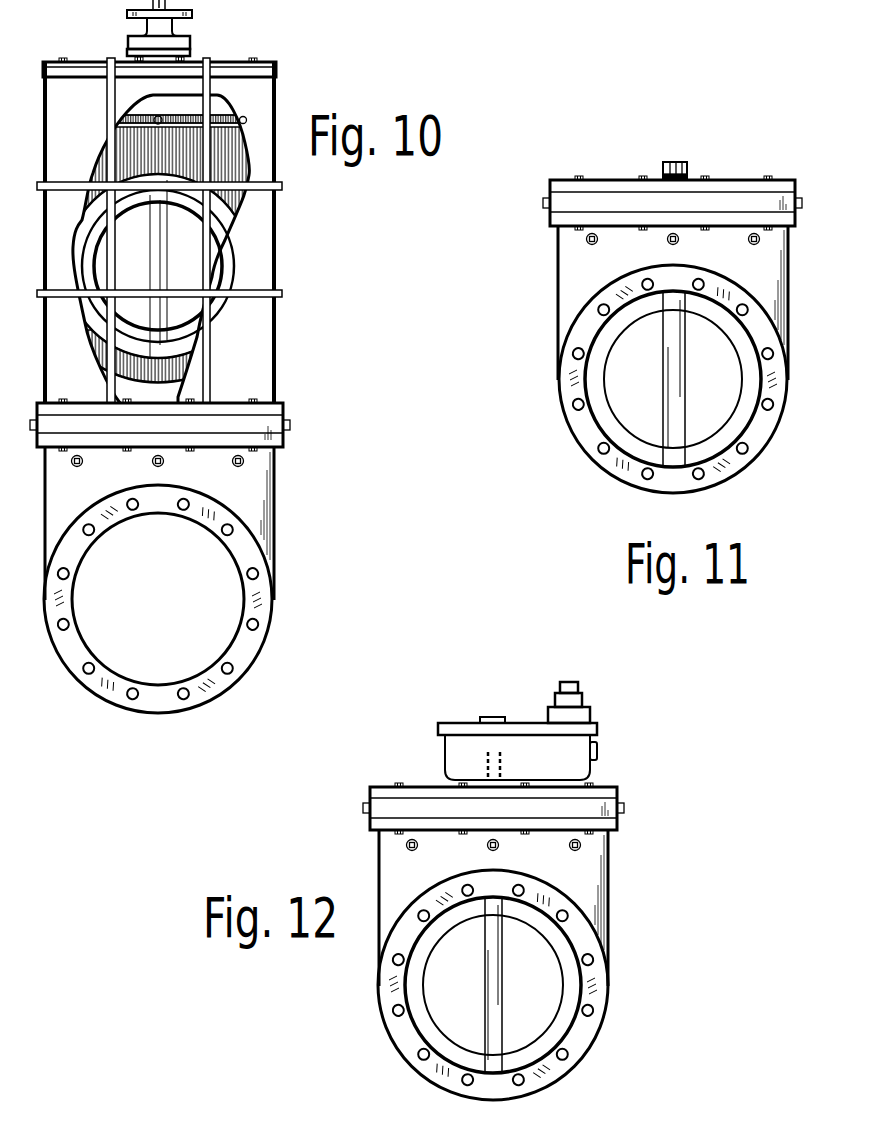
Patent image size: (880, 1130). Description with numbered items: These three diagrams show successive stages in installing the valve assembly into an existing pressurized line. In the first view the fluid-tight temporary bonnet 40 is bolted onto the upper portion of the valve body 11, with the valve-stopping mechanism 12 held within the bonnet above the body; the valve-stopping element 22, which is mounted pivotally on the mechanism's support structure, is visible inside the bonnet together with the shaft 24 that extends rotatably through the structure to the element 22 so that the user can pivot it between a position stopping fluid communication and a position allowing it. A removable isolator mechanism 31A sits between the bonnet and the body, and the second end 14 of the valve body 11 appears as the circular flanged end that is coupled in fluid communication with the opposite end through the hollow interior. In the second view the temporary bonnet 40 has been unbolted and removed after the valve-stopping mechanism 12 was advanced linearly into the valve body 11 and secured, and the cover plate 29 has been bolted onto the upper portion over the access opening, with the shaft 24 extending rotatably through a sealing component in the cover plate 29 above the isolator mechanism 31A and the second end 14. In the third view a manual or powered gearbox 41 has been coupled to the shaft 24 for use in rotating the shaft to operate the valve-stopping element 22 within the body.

In FIG. 10, the valve body 11 is at (278, 488).
In FIG. 11, the valve body 11 is at (558, 313).
In FIG. 12, the valve body 11 is at (608, 900).
In FIG. 10, the valve-stopping mechanism 12 is at (232, 160).
In FIG. 10, the second end 14 is at (163, 705).
In FIG. 11, the second end 14 is at (603, 463).
In FIG. 12, the second end 14 is at (533, 1080).
In FIG. 10, the valve-stopping element 22 is at (193, 240).
In FIG. 11, the valve-stopping element 22 is at (625, 388).
In FIG. 12, the valve-stopping element 22 is at (545, 985).
In FIG. 11, the shaft 24 is at (670, 162).
In FIG. 12, the shaft 24 is at (487, 757).
In FIG. 11, the cover plate 29 is at (560, 187).
In FIG. 12, the cover plate 29 is at (380, 790).
In FIG. 10, the isolator mechanism 31A is at (286, 422).
In FIG. 11, the isolator mechanism 31A is at (557, 207).
In FIG. 12, the isolator mechanism 31A is at (617, 803).
In FIG. 10, the temporary bonnet 40 is at (272, 62).
In FIG. 12, the gearbox 41 is at (578, 755).